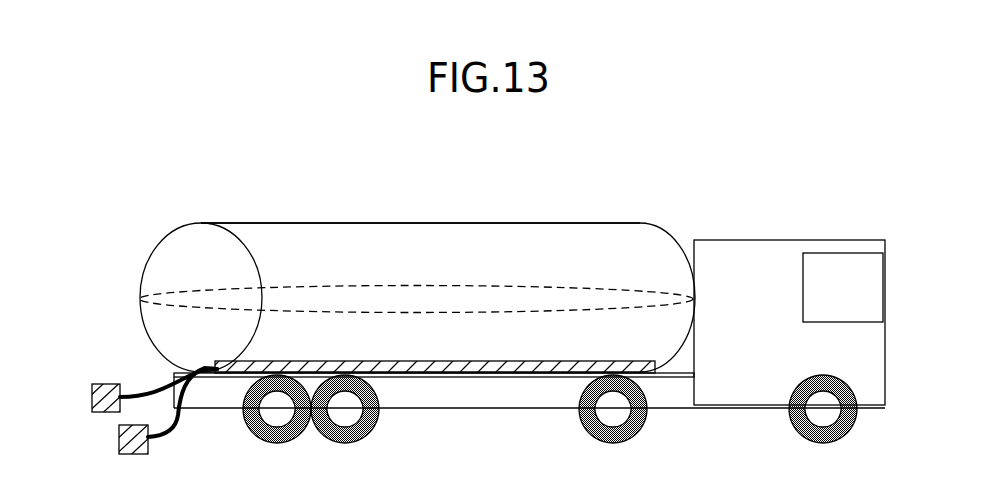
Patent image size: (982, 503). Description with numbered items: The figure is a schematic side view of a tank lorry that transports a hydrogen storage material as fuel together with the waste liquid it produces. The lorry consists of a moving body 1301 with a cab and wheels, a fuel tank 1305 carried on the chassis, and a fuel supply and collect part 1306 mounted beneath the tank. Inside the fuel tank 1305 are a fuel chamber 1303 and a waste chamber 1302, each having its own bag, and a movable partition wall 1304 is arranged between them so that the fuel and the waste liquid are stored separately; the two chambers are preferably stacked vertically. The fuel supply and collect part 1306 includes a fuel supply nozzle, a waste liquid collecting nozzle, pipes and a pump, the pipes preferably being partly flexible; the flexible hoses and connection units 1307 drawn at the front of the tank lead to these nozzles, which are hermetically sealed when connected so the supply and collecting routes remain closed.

The moving body 1301 is at (748, 248).
The waste chamber 1302 is at (530, 325).
The fuel chamber 1303 is at (328, 243).
The movable partition wall 1304 is at (420, 285).
The fuel tank 1305 is at (197, 224).
The fuel supply and collect part 1306 is at (460, 368).
The connection units with hoses 1307 is at (107, 382).